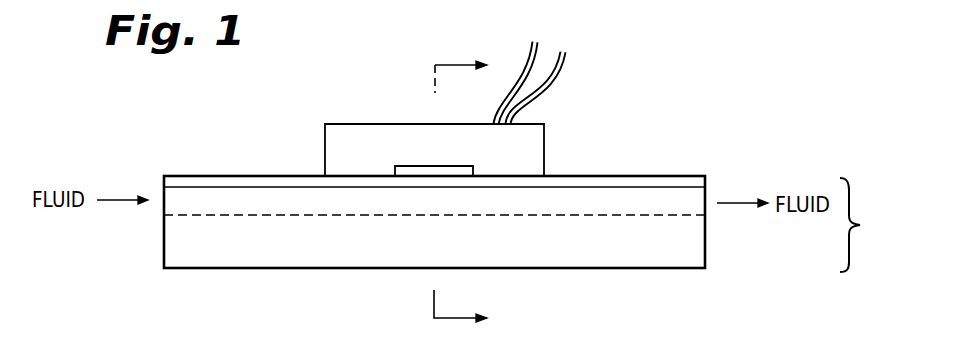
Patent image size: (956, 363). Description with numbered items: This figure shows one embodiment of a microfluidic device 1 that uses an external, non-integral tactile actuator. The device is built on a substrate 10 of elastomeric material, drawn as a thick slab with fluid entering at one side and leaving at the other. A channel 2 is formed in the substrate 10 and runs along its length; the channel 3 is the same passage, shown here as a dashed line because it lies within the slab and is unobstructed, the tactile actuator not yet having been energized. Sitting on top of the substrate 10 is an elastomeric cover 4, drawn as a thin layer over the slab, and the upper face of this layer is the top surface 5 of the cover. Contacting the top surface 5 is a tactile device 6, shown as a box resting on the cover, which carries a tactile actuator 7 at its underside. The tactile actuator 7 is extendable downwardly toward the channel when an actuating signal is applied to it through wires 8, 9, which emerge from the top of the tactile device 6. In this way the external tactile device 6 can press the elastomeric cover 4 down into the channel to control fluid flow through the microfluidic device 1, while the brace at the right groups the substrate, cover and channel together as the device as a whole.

The microfluidic device 1 is at (860, 225).
The channel 2 is at (445, 194).
The channel 3 is at (335, 200).
The elastomeric cover 4 is at (229, 176).
The top surface 5 is at (619, 176).
The tactile device 6 is at (335, 130).
The tactile actuator 7 is at (410, 166).
The wire 8 is at (539, 46).
The wire 9 is at (566, 72).
The substrate 10 is at (183, 243).